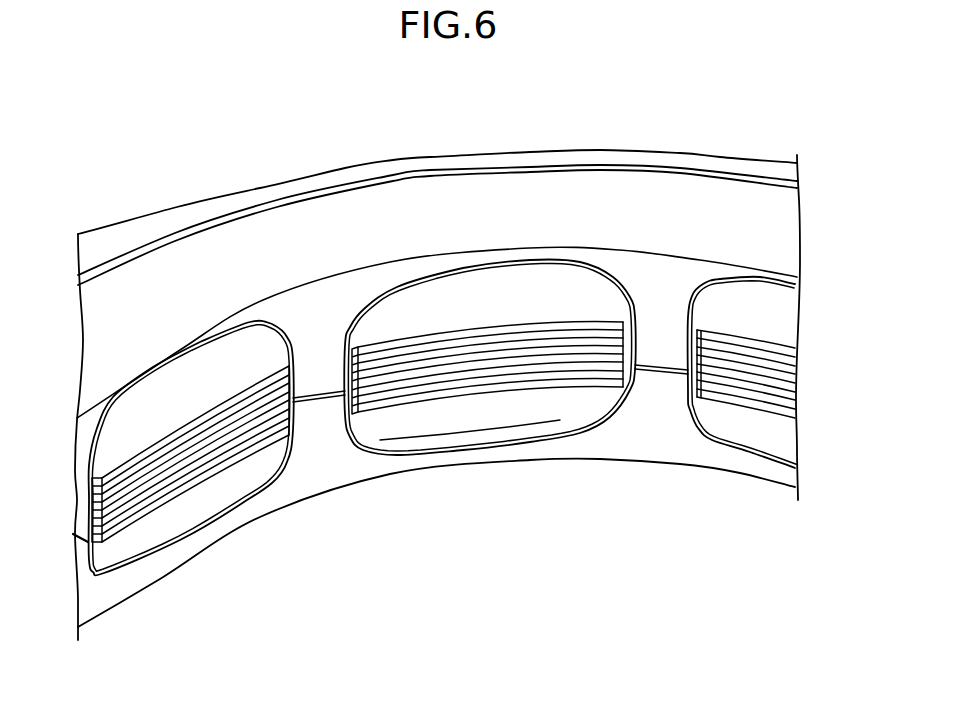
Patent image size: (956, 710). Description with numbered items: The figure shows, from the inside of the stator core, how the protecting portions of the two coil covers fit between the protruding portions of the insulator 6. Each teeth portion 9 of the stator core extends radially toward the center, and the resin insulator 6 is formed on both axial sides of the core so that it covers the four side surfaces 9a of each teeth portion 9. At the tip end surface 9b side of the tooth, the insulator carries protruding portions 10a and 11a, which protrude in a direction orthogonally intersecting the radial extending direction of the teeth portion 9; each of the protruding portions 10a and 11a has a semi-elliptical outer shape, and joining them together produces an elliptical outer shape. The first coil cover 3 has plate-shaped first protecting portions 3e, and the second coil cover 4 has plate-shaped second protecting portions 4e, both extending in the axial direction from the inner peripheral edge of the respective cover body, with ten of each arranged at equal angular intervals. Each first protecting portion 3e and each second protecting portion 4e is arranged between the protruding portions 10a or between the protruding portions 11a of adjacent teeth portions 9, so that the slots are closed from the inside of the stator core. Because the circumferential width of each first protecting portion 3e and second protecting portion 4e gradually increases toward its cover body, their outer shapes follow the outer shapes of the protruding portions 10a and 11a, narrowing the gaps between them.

The first coil cover 3 is at (322, 152).
The first protecting portion 3e is at (318, 330).
The second coil cover 4 is at (264, 532).
The second protecting portion 4e is at (312, 433).
The insulator 6 is at (617, 278).
The teeth portion 9 is at (530, 312).
The side surface 9a is at (485, 326).
The tip end surface 9b is at (535, 378).
The protruding portion 10a is at (207, 363).
The protruding portion 11a is at (422, 430).